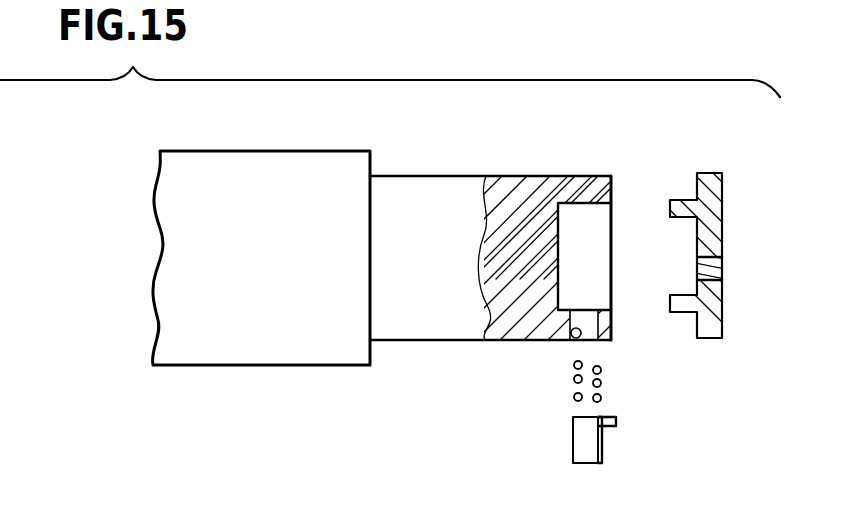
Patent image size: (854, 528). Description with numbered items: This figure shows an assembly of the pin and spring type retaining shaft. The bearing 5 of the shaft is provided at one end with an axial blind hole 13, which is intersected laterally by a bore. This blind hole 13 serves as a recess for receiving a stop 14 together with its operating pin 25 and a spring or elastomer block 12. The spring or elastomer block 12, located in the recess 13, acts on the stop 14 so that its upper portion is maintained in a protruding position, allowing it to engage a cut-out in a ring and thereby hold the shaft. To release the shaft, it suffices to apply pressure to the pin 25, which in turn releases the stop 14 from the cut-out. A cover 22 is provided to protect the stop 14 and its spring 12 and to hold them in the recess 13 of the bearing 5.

The bearing 5 is at (413, 210).
The axial blind hole 13 is at (582, 218).
The spring or elastomer block 12 is at (601, 381).
The stop 14 is at (573, 447).
The operating pin 25 is at (616, 425).
The cover 22 is at (722, 200).